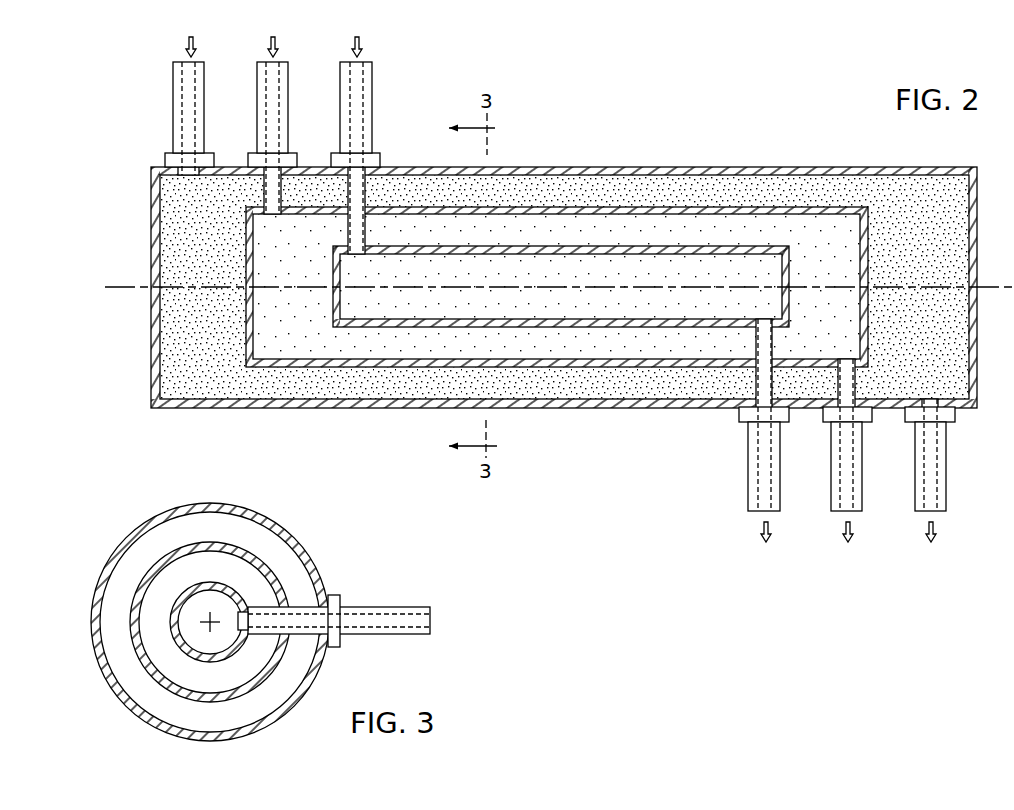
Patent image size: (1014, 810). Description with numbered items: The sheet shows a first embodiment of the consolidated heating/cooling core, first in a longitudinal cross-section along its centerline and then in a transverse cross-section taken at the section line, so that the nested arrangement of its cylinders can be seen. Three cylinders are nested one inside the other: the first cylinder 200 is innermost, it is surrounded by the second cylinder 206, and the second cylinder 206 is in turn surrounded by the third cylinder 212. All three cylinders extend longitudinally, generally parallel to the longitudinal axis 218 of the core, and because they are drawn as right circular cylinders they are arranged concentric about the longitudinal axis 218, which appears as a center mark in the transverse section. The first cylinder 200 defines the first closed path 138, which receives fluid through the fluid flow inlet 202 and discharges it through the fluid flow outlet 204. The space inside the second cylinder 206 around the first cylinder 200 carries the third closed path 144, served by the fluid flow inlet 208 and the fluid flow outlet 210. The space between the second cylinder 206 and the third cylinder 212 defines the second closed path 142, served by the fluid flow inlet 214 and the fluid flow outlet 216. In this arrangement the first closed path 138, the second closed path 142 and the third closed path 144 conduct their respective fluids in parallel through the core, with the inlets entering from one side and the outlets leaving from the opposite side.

In FIG. 2, the third cylinder 212 is at (603, 167).
In FIG. 3, the third cylinder 212 is at (262, 512).
In FIG. 2, the second cylinder 206 is at (657, 207).
In FIG. 3, the second cylinder 206 is at (262, 562).
In FIG. 2, the first cylinder 200 is at (710, 246).
In FIG. 3, the first cylinder 200 is at (242, 598).
In FIG. 2, the fluid flow inlet 214 is at (181, 59).
In FIG. 2, the fluid flow inlet 208 is at (264, 59).
In FIG. 2, the fluid flow inlet 202 is at (347, 59).
In FIG. 2, the fluid flow outlet 204 is at (757, 514).
In FIG. 2, the fluid flow outlet 210 is at (840, 514).
In FIG. 2, the fluid flow outlet 216 is at (923, 514).
In FIG. 2, the second closed path 142 is at (568, 387).
In FIG. 2, the third closed path 144 is at (637, 340).
In FIG. 2, the first closed path 138 is at (700, 303).
In FIG. 3, the longitudinal axis 218 is at (207, 617).